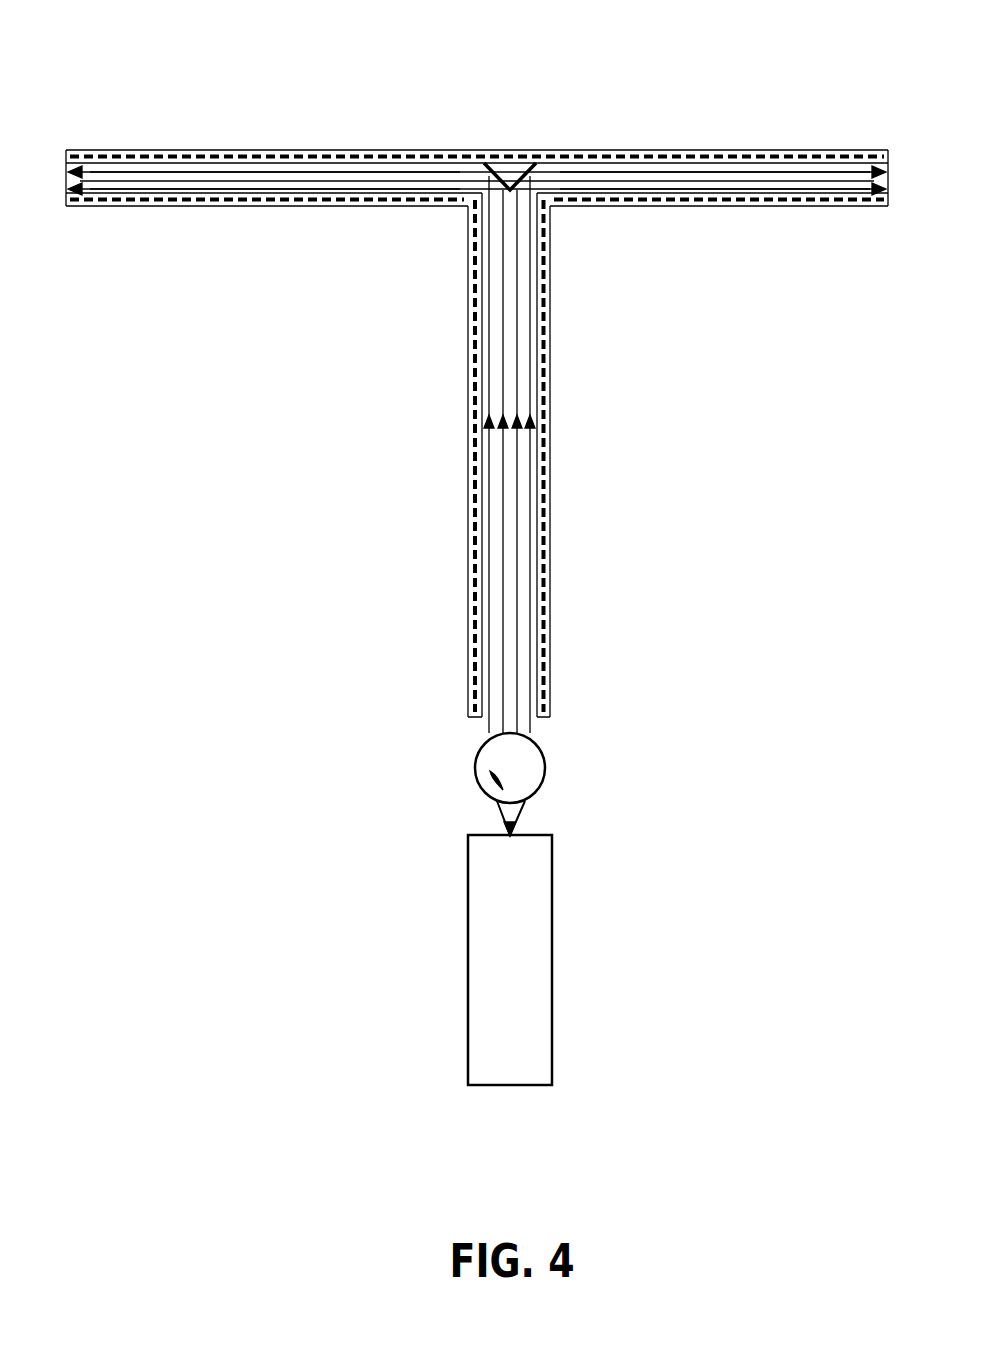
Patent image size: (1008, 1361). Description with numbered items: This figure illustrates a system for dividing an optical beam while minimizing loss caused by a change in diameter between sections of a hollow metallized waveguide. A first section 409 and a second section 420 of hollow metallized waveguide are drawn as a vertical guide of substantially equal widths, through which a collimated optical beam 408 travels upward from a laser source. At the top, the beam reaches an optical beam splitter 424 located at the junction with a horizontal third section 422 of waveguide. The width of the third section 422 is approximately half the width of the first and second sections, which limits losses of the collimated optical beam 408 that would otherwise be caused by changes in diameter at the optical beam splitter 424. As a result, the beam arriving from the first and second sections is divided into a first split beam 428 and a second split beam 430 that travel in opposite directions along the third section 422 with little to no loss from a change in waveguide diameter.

The third section of waveguide 422 is at (285, 136).
The optical beam splitter 424 is at (512, 162).
The second section of hollow metallized waveguide 420 is at (436, 252).
The collimated optical beam 408 is at (532, 525).
The first section of hollow metallized waveguide 409 is at (447, 644).
The first split beam 428 is at (227, 176).
The second split beam 430 is at (723, 180).